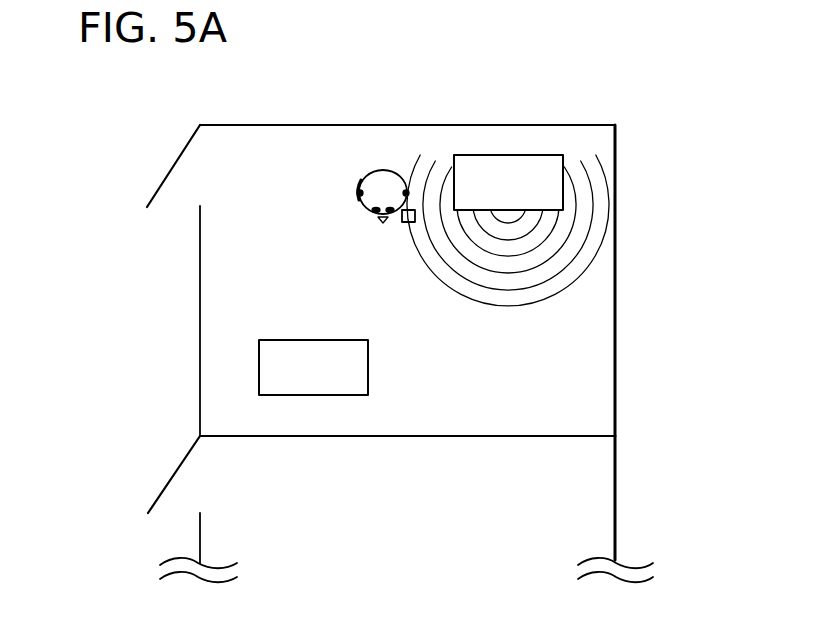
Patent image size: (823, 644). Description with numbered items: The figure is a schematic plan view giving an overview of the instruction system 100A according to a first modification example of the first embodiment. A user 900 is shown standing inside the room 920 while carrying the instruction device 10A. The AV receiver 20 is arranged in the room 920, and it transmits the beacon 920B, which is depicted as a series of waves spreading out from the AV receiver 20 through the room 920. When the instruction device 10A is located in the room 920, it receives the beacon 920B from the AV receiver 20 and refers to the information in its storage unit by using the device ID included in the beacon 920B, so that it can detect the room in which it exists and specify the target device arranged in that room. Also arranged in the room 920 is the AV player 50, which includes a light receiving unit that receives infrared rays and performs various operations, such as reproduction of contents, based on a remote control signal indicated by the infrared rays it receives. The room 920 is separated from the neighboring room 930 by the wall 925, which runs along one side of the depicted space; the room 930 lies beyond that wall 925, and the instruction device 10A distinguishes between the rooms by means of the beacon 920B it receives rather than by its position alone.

The instruction system 100A is at (632, 97).
The AV receiver 20 is at (562, 157).
The AV player 50 is at (293, 340).
The user 900 is at (358, 181).
The instruction device 10A is at (403, 223).
The room 920 is at (616, 243).
The beacon 920B is at (592, 195).
The wall 925 is at (516, 435).
The room 930 is at (618, 500).